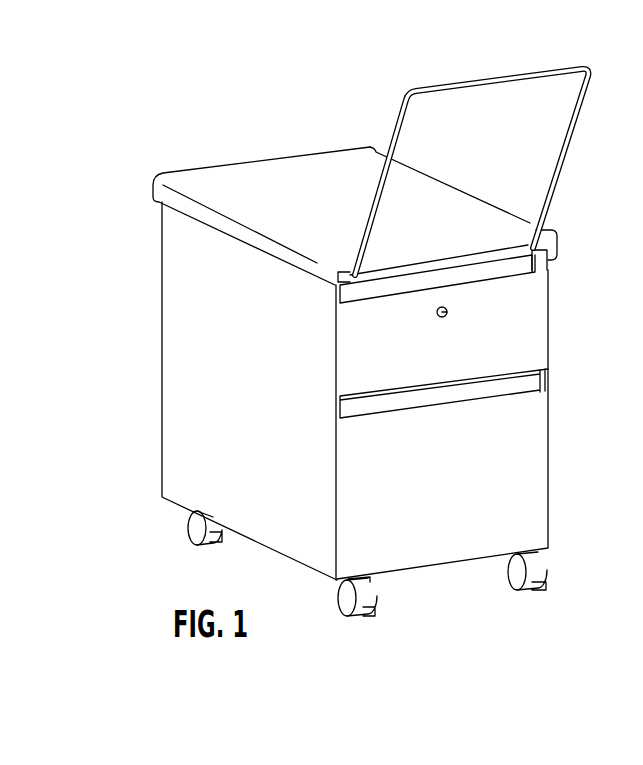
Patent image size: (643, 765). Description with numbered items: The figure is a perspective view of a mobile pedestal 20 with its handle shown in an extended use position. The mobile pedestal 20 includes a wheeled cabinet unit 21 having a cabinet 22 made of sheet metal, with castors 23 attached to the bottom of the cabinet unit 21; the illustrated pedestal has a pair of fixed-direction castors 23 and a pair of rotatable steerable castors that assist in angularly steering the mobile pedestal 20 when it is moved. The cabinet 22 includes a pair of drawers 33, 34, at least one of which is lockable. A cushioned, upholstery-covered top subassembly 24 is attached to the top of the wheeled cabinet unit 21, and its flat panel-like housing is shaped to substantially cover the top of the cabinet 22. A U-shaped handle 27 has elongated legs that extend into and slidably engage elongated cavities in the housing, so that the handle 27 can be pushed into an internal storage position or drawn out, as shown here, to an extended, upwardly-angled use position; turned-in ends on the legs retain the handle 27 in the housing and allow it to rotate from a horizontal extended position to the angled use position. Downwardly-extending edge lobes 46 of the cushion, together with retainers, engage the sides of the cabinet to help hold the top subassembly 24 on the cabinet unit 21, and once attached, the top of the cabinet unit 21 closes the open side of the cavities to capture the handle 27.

The mobile pedestal 20 is at (262, 96).
The wheeled cabinet unit 21 is at (152, 355).
The cabinet 22 is at (263, 410).
The castors 23 is at (356, 620).
The top subassembly 24 is at (200, 158).
The U-shaped handle 27 is at (522, 72).
The drawer 33 is at (503, 337).
The drawer 34 is at (437, 487).
The edge lobes 46 is at (558, 256).